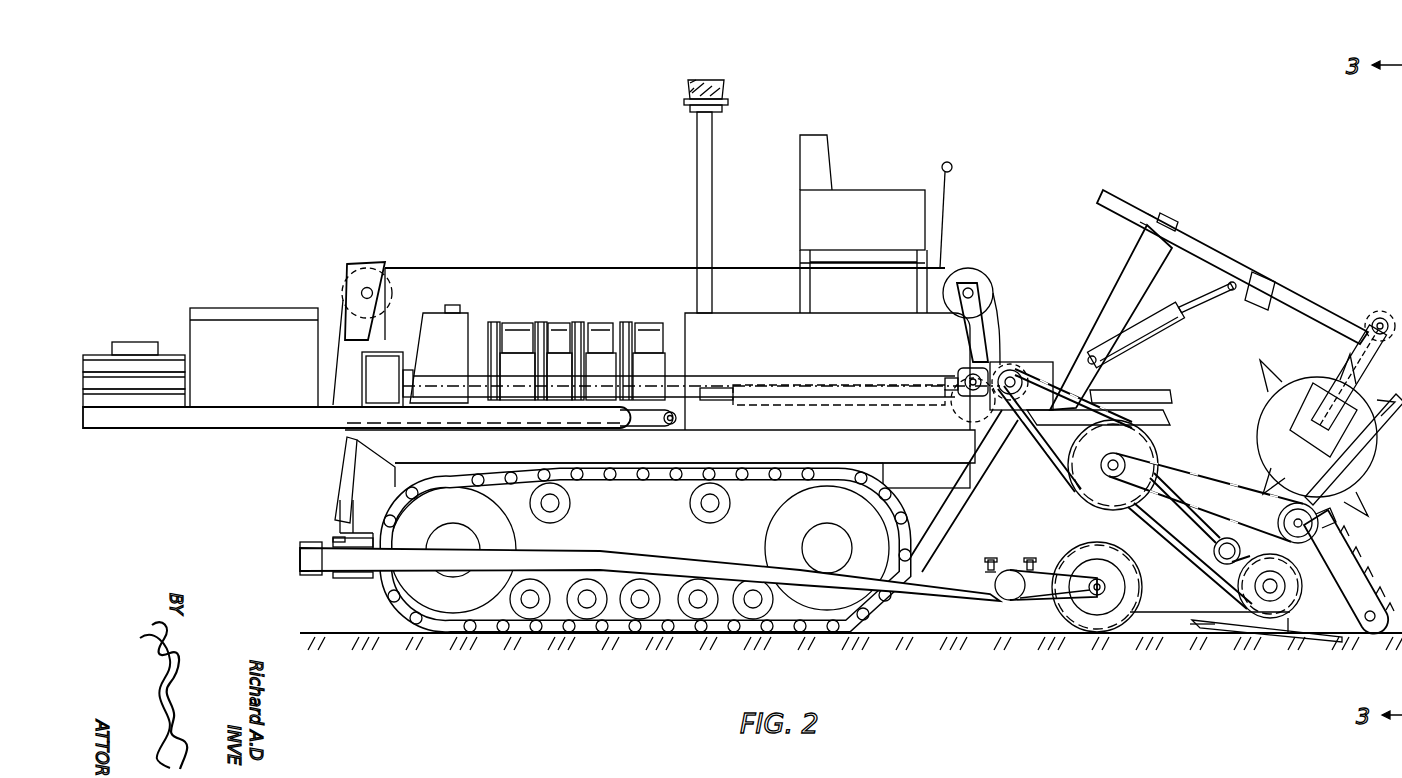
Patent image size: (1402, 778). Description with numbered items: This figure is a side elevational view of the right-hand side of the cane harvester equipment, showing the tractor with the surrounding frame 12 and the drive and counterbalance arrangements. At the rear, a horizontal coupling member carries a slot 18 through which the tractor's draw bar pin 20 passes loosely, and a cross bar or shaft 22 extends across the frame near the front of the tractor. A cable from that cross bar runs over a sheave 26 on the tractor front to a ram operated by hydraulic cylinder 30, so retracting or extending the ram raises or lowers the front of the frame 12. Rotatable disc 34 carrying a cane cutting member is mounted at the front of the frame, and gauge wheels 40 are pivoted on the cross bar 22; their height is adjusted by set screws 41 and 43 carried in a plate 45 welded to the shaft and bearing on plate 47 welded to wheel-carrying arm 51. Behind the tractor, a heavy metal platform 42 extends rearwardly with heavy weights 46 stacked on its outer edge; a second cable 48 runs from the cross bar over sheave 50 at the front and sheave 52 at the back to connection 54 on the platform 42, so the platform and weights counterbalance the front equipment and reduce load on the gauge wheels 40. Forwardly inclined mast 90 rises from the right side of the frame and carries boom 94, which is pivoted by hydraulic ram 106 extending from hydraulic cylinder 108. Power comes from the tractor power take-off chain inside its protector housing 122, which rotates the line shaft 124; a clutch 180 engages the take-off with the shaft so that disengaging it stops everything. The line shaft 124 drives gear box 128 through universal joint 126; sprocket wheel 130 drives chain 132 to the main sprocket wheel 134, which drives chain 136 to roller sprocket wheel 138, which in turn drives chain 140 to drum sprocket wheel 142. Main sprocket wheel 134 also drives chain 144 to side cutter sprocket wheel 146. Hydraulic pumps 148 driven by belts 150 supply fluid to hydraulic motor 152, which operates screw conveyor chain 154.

The frame 12 is at (383, 597).
The slot 18 is at (346, 552).
The draw bar pin 20 is at (342, 558).
The cross bar or shaft 22 is at (1000, 593).
The sheave 26 is at (957, 413).
The hydraulic cylinder 30 is at (822, 422).
The rotatable disc 34 is at (1222, 610).
The gauge wheels 40 is at (1081, 554).
The set screw 41 is at (994, 559).
The set screw 43 is at (1032, 559).
The plate 45 is at (992, 572).
The plate 47 is at (967, 597).
The second cable 48 is at (641, 268).
The sheave 50 is at (985, 283).
The wheel-carrying arm 51 is at (1037, 600).
The sheave 52 is at (344, 293).
The connection 54 is at (331, 410).
The heavy metal platform 42 is at (275, 422).
The heavy weights 46 is at (122, 365).
The forwardly inclined mast 90 is at (1125, 264).
The boom 94 is at (1206, 246).
The hydraulic ram 106 is at (1192, 302).
The hydraulic cylinder 108 is at (1167, 333).
The power take-off chain protector housing 122 is at (393, 361).
The line shaft 124 is at (450, 380).
The universal joint 126 is at (960, 373).
The gear box 128 is at (1037, 354).
The sprocket wheel 130 is at (1023, 359).
The chain 132 is at (1085, 395).
The main sprocket wheel 134 is at (1150, 455).
The chain 136 is at (1203, 566).
The roller sprocket wheel 138 is at (1288, 605).
The chain 140 is at (1223, 542).
The drum sprocket wheel 142 is at (1212, 557).
The chain 144 is at (1250, 494).
The side cutter sprocket wheel 146 is at (1313, 527).
The hydraulic pumps 148 is at (564, 316).
The belts 150 is at (605, 318).
The hydraulic motor 152 is at (1376, 315).
The screw conveyor chain 154 is at (1353, 347).
The clutch 180 is at (655, 476).